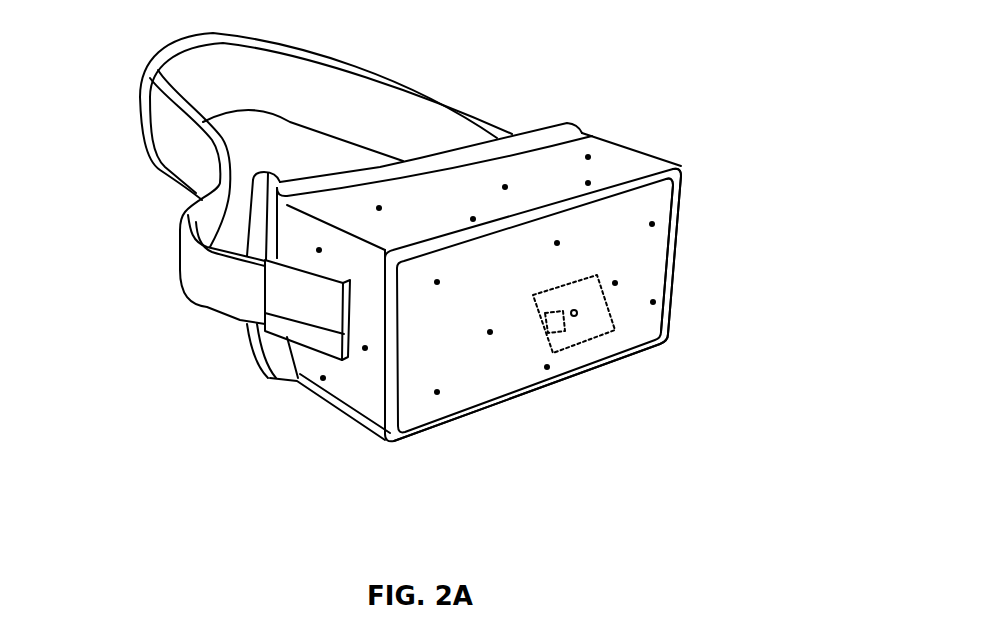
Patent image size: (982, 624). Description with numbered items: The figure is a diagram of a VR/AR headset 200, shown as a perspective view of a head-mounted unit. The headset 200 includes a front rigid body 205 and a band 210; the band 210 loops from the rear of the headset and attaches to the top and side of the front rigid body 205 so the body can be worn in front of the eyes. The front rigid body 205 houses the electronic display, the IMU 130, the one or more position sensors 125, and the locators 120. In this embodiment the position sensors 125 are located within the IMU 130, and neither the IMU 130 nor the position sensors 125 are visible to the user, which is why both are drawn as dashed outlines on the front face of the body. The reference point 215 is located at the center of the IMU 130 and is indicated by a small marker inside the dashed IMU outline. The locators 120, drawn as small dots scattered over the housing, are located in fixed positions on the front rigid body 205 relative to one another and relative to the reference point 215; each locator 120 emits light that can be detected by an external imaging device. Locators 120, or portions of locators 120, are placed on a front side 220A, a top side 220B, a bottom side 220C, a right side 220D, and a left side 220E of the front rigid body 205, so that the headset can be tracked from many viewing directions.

The VR/AR headset 200 is at (29, 35).
The band 210 is at (415, 92).
The front rigid body 205 is at (465, 298).
The front side 220A is at (427, 412).
The top side 220B is at (355, 210).
The bottom side 220C is at (319, 415).
The right side 220D is at (357, 380).
The left side 220E is at (658, 156).
The locators 120 is at (662, 296).
The position sensors 125 is at (549, 334).
The IMU 130 is at (620, 331).
The reference point 215 is at (577, 322).